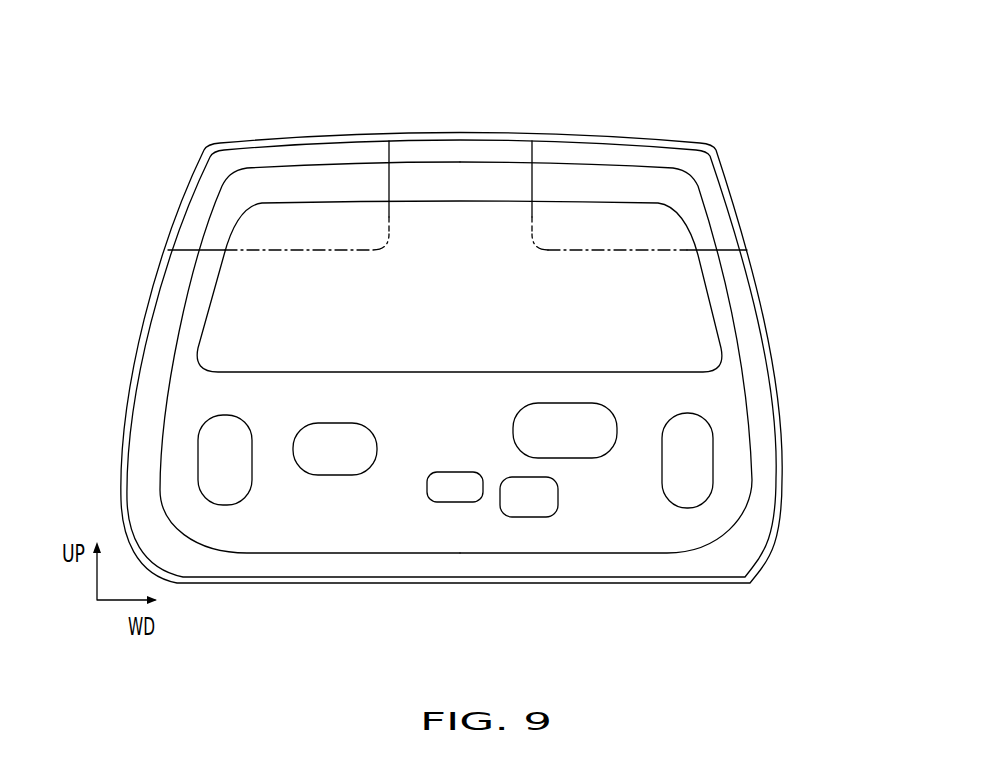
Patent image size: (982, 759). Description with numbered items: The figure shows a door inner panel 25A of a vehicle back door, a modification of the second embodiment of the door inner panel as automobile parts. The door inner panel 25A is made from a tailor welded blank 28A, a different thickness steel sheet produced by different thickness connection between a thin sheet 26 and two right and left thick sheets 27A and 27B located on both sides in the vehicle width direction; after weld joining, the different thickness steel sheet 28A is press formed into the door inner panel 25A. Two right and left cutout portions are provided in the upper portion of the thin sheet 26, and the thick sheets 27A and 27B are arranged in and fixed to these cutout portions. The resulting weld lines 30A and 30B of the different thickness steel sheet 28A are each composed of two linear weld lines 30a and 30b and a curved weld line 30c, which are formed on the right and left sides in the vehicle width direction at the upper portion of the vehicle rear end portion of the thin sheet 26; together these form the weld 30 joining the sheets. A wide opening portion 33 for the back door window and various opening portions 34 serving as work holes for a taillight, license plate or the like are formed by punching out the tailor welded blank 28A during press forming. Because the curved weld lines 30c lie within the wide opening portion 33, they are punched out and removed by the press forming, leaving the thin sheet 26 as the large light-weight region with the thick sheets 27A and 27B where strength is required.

The door inner panel 25A is at (742, 104).
The thin sheet 26 is at (777, 347).
The thick sheet 27A is at (600, 155).
The thick sheet 27B is at (305, 153).
The tailor welded blank 28A is at (764, 294).
The partition member 30 is at (457, 239).
The weld line 30A is at (527, 150).
The weld line 30B is at (393, 150).
The linear weld line 30a is at (390, 178).
The linear weld line 30b is at (222, 251).
The curved weld line 30c is at (386, 242).
The opening portion 33 is at (488, 345).
The opening portions 34 is at (340, 477).